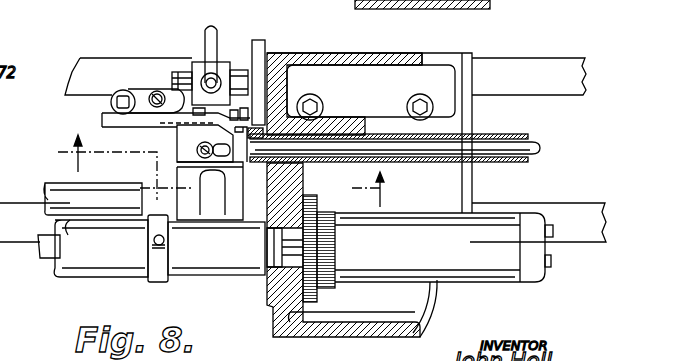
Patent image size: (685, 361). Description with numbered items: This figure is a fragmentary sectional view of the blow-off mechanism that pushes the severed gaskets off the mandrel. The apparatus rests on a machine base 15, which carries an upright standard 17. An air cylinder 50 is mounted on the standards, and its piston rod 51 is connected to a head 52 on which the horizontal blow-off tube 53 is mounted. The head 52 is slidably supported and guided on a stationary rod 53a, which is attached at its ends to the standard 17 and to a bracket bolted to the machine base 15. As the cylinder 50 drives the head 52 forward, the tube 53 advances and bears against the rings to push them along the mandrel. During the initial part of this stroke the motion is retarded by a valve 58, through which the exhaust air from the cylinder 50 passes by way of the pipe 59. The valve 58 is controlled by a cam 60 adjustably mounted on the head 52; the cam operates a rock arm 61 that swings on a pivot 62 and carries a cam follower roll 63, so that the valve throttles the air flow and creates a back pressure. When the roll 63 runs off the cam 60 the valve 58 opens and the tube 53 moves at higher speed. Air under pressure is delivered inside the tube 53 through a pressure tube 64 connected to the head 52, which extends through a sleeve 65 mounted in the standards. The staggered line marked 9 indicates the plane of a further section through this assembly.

The machine base 15 is at (542, 62).
The standard 17 is at (280, 308).
The air cylinder 50 is at (463, 253).
The piston rod 51 is at (282, 250).
The head 52 is at (225, 258).
The blow-off tube 53 is at (97, 260).
The stationary rod 53a is at (115, 190).
The valve 58 is at (225, 60).
The pipe 59 is at (213, 32).
The cam 60 is at (147, 118).
The rock arm 61 is at (140, 93).
The pivot 62 is at (158, 91).
The cam follower roll 63 is at (111, 103).
The pressure tube 64 is at (532, 138).
The sleeve 65 is at (495, 134).
The section line 9 is at (225, 169).